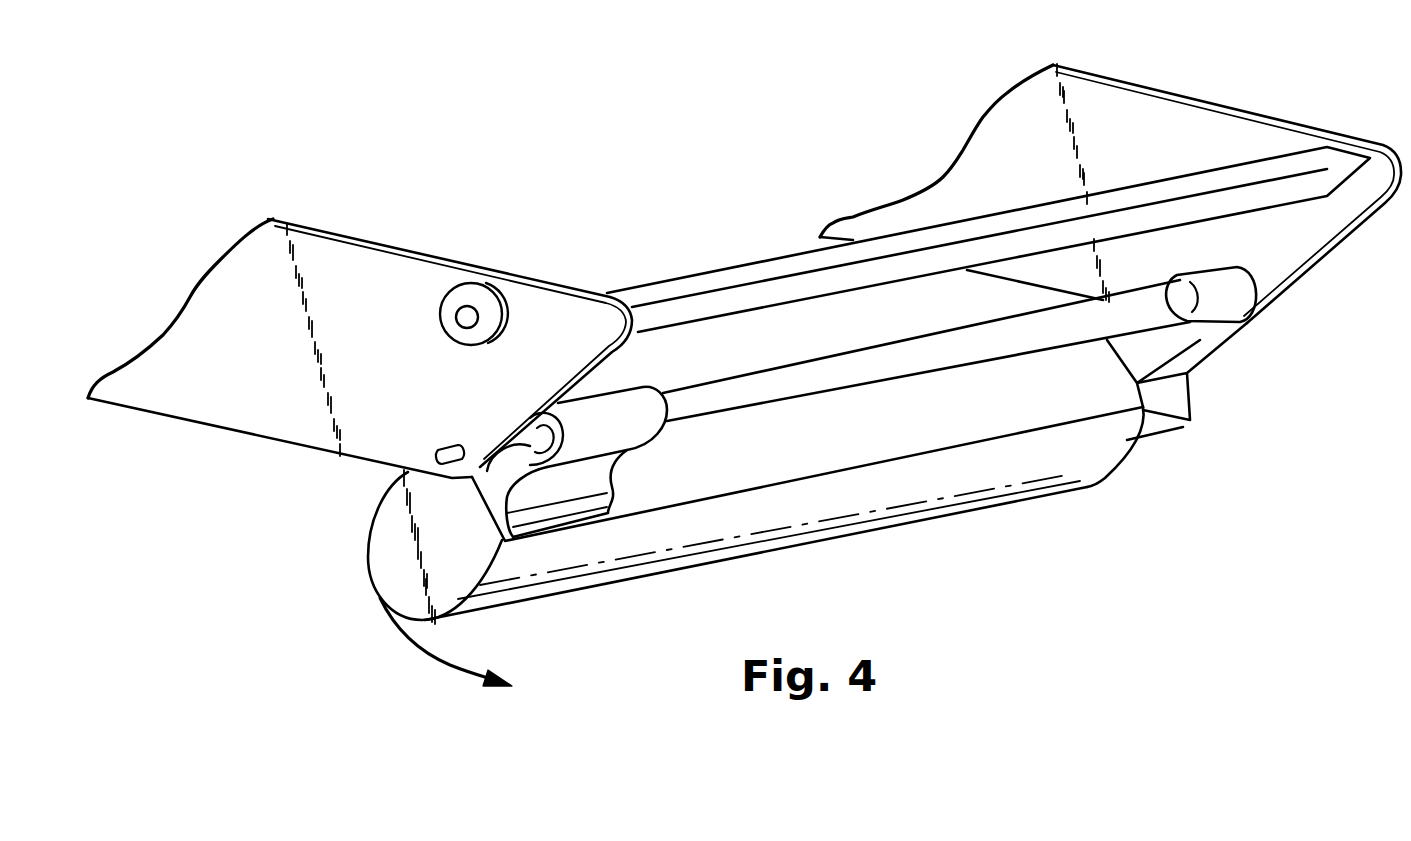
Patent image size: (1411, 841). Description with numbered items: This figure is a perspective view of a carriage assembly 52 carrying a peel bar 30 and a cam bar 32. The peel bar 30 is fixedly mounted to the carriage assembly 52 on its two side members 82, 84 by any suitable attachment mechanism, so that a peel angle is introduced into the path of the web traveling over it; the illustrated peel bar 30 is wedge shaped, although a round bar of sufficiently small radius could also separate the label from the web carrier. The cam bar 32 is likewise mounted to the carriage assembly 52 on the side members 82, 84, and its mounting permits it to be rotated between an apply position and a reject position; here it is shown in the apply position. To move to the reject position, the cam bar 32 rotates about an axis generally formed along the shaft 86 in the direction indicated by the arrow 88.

The carriage assembly 52 is at (588, 148).
The peel bar 30 is at (723, 277).
The cam bar 32 is at (1123, 457).
The side member 82 is at (225, 432).
The side member 84 is at (1330, 260).
The shaft 86 is at (930, 360).
The arrow 88 is at (443, 660).